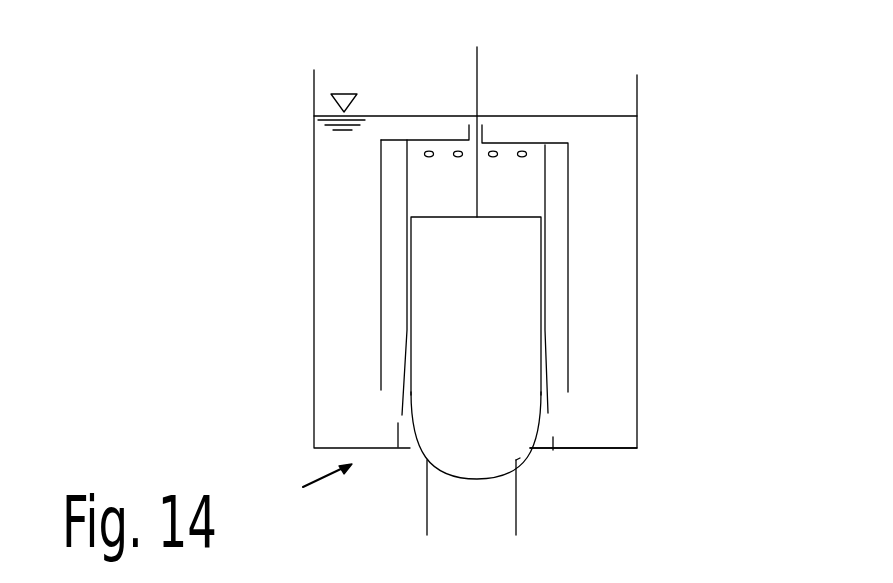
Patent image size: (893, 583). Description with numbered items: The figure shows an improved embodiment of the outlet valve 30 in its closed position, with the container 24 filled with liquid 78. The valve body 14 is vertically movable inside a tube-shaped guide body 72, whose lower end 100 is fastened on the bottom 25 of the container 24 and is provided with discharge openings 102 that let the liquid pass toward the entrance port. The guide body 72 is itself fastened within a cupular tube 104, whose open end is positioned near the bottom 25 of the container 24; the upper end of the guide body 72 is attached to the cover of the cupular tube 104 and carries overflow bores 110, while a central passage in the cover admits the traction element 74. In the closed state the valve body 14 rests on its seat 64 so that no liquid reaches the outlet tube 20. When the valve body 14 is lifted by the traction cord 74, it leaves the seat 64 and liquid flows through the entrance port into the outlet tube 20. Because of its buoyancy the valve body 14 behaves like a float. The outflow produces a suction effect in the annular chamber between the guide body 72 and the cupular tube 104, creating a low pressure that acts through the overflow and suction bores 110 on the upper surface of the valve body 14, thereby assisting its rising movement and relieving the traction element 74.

The valve body 14 is at (423, 327).
The outlet tube 20 is at (427, 508).
The container 24 is at (313, 191).
The bottom 25 is at (598, 452).
The outlet valve 30 is at (310, 494).
The seat 64 is at (523, 457).
The guide body 72 is at (545, 195).
The traction element 74 is at (477, 71).
The liquid 78 is at (335, 222).
The lower end 100 is at (555, 445).
The discharge openings 102 is at (400, 422).
The cupular tube 104 is at (568, 309).
The overflow bores 110 is at (548, 157).